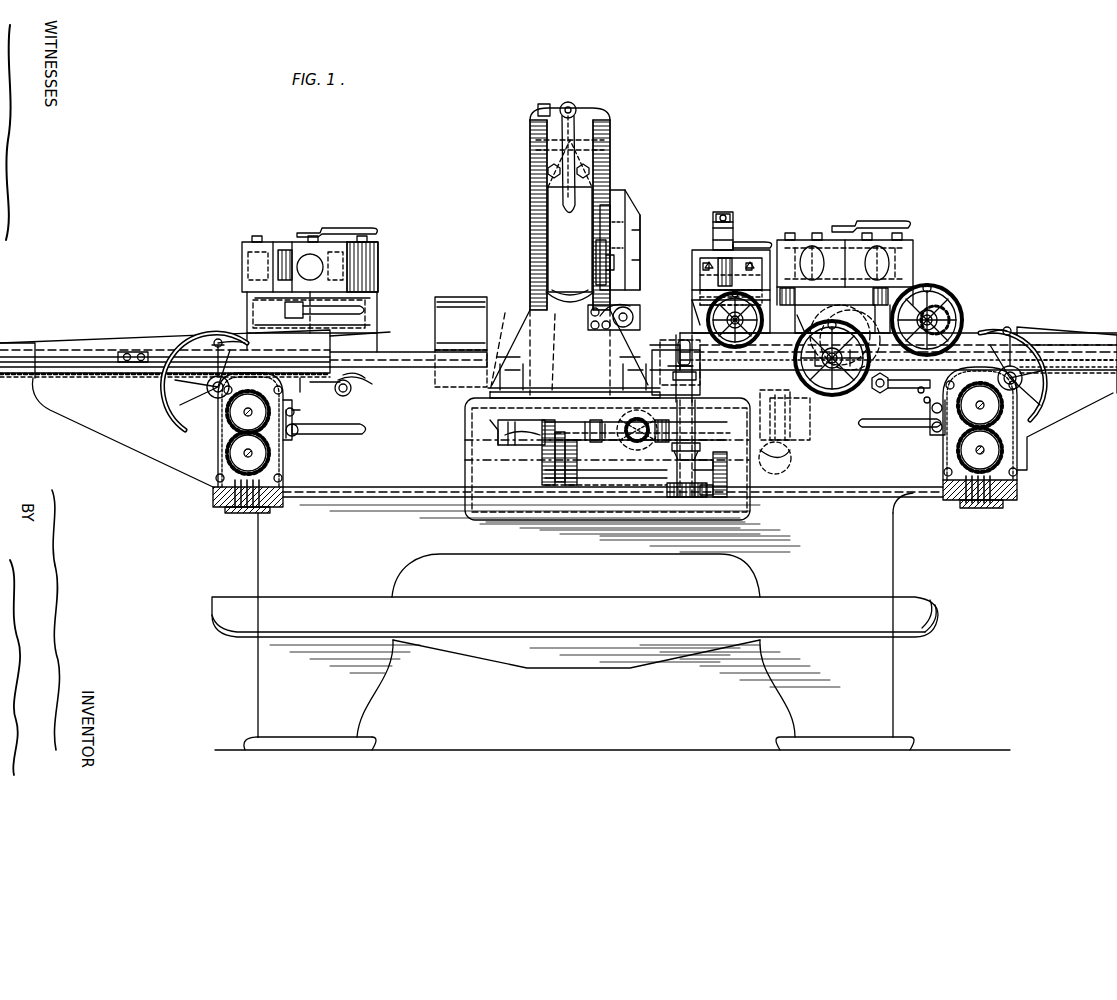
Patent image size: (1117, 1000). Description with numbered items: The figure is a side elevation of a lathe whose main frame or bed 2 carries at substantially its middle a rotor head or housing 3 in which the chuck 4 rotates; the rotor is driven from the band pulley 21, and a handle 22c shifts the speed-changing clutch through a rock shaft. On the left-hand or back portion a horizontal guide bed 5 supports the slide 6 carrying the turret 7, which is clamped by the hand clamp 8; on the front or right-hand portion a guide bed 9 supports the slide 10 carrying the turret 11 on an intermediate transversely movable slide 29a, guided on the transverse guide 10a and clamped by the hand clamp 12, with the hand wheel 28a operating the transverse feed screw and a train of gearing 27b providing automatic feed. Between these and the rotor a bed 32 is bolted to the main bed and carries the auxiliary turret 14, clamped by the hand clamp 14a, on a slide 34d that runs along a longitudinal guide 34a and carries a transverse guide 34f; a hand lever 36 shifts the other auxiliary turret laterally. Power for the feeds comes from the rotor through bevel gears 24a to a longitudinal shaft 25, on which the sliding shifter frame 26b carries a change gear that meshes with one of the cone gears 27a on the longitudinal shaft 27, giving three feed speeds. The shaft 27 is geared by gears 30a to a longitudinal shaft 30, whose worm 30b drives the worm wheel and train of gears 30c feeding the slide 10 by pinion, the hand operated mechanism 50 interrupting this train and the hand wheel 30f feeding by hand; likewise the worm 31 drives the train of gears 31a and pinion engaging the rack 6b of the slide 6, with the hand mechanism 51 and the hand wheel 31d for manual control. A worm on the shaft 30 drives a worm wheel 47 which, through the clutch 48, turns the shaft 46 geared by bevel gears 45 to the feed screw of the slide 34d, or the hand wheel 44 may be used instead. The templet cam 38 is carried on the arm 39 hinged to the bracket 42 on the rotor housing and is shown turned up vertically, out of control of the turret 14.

The main frame or bed 2 is at (558, 542).
The rotor head or housing 3 is at (574, 253).
The chuck 4 is at (632, 240).
The horizontal guide bed 5 is at (393, 374).
The slide 6 is at (195, 342).
The rack 6b is at (100, 378).
The turret 7 is at (297, 294).
The hand clamp 8 is at (332, 230).
The guide bed 9 is at (778, 356).
The slide 10 is at (978, 335).
The transverse guide 10a is at (838, 337).
The turret 11 is at (912, 252).
The hand clamp 12 is at (871, 217).
The turret 14 is at (706, 258).
The hand clamp 14a is at (752, 236).
The band pulley 21 is at (461, 342).
The handle 22c is at (575, 185).
The bevel gears 24a is at (648, 408).
The longitudinal shaft 25 is at (637, 439).
The sliding shifter frame 26b is at (530, 425).
The longitudinal shaft 27 is at (535, 472).
The cone gears 27a is at (575, 470).
The train of gearing 27b is at (790, 432).
The hand wheel 28a is at (950, 300).
The slide 29a is at (815, 305).
The longitudinal shaft 30 is at (850, 504).
The gears 30a is at (722, 500).
The worm 30b is at (983, 505).
The worm wheel and train of gears 30c is at (950, 440).
The hand wheel 30f is at (1048, 385).
The worm 31 is at (240, 512).
The train of gears 31a is at (268, 430).
The hand wheel 31d is at (178, 405).
The bed 32 is at (883, 360).
The longitudinal guide 34a is at (698, 338).
The slide 34d is at (700, 312).
The transverse guide 34f is at (702, 282).
The hand lever 36 is at (725, 220).
The cam 38 is at (600, 250).
The arm 39 is at (606, 226).
The bracket 42 is at (632, 318).
The hand wheel 44 is at (858, 388).
The bevel gears 45 is at (694, 375).
The shaft 46 is at (696, 403).
The worm wheel 47 is at (668, 487).
The clutch 48 is at (710, 467).
The hand operated mechanism 50 is at (905, 430).
The hand mechanism 51 is at (326, 421).